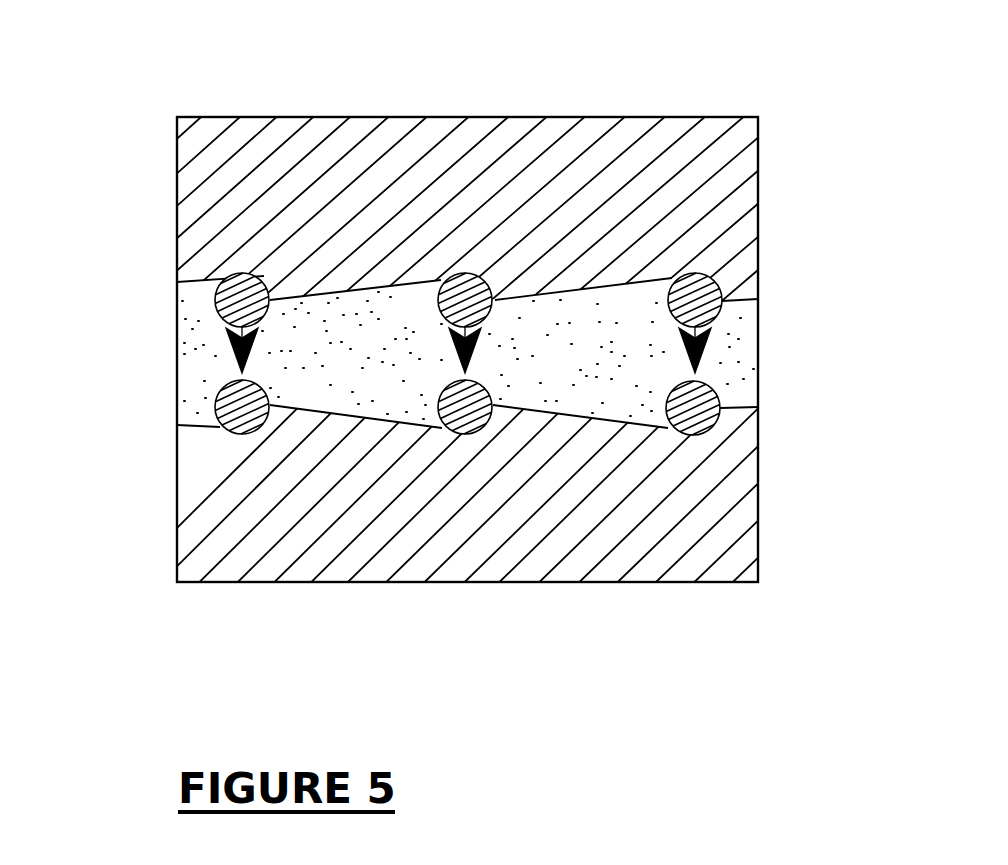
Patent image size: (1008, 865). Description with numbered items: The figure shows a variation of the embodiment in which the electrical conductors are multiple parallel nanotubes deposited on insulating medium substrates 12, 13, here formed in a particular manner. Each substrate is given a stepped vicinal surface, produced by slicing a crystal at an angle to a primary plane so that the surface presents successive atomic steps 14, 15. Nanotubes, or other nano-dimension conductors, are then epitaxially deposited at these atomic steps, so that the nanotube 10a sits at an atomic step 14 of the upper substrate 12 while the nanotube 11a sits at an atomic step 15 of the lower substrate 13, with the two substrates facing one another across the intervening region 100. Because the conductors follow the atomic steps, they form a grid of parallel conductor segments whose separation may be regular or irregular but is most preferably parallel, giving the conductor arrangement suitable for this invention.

The insulating medium substrate 12 is at (468, 168).
The insulating medium substrate 13 is at (466, 528).
The atomic step 14 is at (260, 277).
The atomic step 15 is at (263, 430).
The nanotube 10a is at (720, 310).
The nanotube 11a is at (720, 397).
The material passage / flow direction (100'') 100 is at (228, 352).